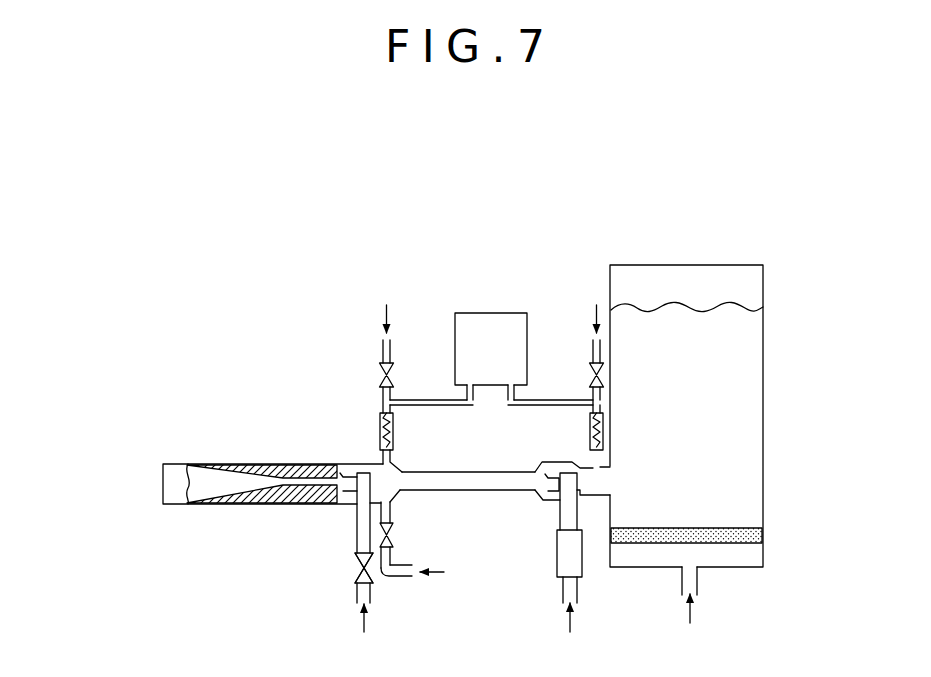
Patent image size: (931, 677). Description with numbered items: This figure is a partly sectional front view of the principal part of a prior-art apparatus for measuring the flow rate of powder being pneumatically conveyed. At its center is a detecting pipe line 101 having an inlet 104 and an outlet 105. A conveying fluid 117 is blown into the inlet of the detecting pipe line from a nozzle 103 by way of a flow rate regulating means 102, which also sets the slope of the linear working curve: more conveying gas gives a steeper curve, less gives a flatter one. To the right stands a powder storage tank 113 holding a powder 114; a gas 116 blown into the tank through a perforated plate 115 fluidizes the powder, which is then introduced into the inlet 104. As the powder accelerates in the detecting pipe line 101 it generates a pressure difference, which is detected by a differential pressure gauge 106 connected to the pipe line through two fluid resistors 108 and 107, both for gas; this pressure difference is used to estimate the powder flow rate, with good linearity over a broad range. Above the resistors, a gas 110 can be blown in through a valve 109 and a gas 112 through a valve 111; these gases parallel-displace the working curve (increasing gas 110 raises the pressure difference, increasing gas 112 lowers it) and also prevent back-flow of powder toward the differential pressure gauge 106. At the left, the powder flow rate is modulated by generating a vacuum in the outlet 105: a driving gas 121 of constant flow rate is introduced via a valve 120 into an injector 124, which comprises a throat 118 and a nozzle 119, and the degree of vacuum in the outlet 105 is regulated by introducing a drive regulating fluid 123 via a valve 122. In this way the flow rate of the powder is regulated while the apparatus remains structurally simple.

The detecting pipe line 101 is at (487, 491).
The flow rate regulating means 102 is at (568, 555).
The nozzle 103 is at (557, 492).
The inlet 104 is at (587, 474).
The outlet 105 is at (393, 470).
The differential pressure gauge 106 is at (502, 322).
The fluid resistor 107 is at (588, 432).
The fluid resistor 108 is at (395, 433).
The valve 109 is at (589, 371).
The gas 110 is at (596, 305).
The valve 111 is at (394, 371).
The gas 112 is at (386, 305).
The powder storage tank 113 is at (750, 302).
The powder 114 is at (743, 410).
The perforated plate 115 is at (743, 530).
The gas 116 is at (690, 623).
The conveying fluid 117 is at (570, 632).
The throat 118 is at (293, 467).
The nozzle 119 is at (356, 475).
The valve 120 is at (355, 569).
The driving gas 121 is at (364, 632).
The valve 122 is at (394, 540).
The drive regulating fluid 123 is at (444, 572).
The injector 124 is at (323, 398).